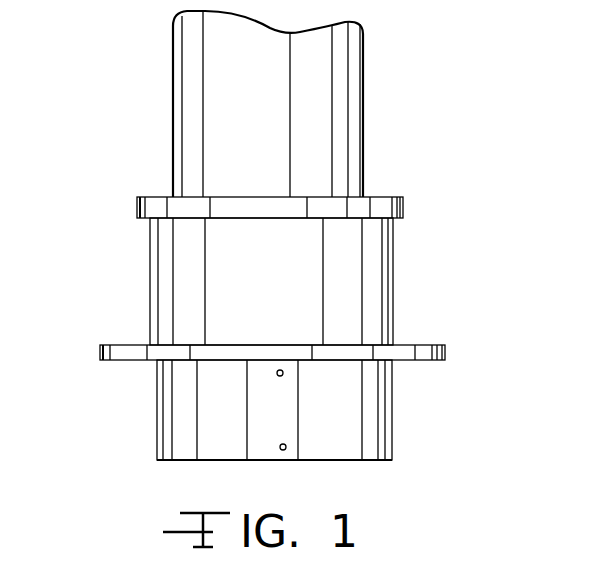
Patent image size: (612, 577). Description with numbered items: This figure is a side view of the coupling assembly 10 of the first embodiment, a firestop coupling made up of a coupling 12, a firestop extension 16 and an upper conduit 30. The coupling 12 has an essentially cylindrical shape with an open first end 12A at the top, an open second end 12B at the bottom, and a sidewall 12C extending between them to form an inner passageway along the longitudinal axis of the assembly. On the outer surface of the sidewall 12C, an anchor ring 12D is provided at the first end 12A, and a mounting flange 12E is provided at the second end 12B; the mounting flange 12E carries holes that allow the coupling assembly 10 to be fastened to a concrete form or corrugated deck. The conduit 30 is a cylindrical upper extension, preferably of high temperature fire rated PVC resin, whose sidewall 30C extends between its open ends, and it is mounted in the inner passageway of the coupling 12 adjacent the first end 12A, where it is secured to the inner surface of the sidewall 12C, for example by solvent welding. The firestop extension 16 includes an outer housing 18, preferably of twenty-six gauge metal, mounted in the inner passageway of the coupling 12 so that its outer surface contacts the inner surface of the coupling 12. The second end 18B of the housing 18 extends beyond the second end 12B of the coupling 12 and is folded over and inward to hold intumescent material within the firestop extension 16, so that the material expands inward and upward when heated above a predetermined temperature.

The coupling assembly 10 is at (418, 228).
The coupling 12 is at (393, 255).
The first end 12A is at (372, 196).
The second end 12B is at (397, 360).
The sidewall 12C is at (350, 297).
The anchor ring 12D is at (418, 199).
The mounting flange 12E is at (445, 353).
The firestop extension 16 is at (392, 417).
The housing 18 is at (157, 423).
The second end 18B is at (392, 460).
The conduit 30 is at (365, 72).
The sidewall 30C is at (365, 103).